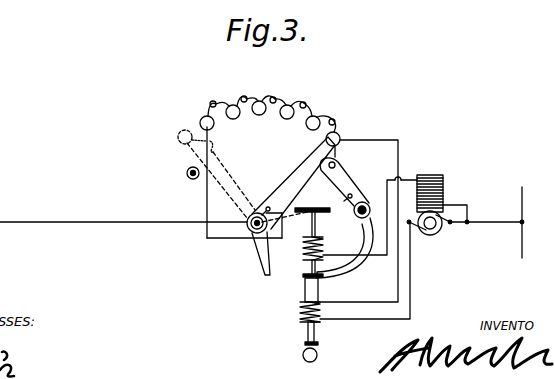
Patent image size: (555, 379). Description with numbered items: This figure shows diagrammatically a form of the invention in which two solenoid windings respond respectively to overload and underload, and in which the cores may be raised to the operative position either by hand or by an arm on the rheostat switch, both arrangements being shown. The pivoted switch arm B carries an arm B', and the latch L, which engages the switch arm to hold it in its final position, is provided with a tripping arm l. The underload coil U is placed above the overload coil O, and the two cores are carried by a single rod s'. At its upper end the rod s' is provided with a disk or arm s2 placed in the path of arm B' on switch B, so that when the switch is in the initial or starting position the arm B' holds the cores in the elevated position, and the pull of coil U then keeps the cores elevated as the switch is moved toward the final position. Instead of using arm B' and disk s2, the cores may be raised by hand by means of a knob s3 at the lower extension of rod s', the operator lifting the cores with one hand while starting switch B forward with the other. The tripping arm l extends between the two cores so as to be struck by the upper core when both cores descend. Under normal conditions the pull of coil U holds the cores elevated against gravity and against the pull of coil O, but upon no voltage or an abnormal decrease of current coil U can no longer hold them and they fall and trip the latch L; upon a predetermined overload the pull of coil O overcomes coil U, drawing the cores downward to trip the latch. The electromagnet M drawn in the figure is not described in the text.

The pivoted switch arm B is at (293, 183).
The arm on switch B' is at (255, 253).
The latch L is at (345, 182).
The tripping arm l is at (345, 275).
The electromagnet M is at (437, 178).
The disk or arm s2 is at (320, 207).
The underload coil U is at (305, 247).
The rod s' is at (304, 281).
The overload coil O is at (300, 308).
The knob s3 is at (304, 354).